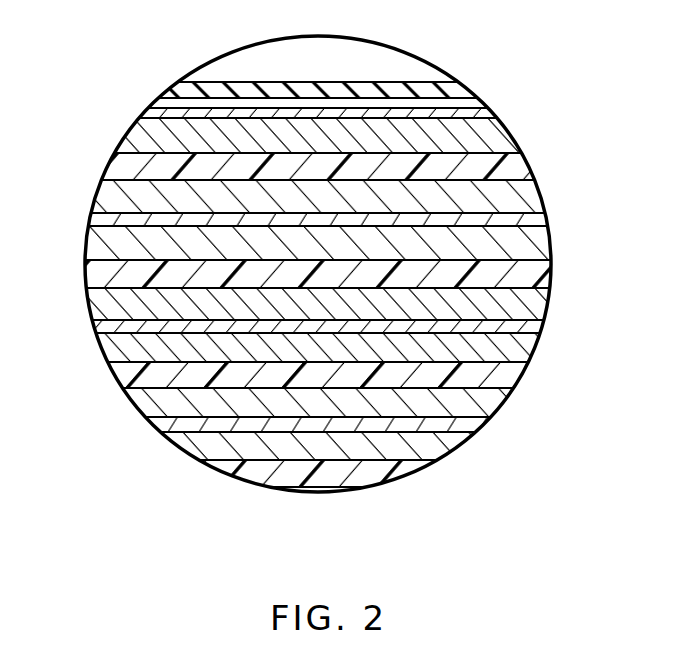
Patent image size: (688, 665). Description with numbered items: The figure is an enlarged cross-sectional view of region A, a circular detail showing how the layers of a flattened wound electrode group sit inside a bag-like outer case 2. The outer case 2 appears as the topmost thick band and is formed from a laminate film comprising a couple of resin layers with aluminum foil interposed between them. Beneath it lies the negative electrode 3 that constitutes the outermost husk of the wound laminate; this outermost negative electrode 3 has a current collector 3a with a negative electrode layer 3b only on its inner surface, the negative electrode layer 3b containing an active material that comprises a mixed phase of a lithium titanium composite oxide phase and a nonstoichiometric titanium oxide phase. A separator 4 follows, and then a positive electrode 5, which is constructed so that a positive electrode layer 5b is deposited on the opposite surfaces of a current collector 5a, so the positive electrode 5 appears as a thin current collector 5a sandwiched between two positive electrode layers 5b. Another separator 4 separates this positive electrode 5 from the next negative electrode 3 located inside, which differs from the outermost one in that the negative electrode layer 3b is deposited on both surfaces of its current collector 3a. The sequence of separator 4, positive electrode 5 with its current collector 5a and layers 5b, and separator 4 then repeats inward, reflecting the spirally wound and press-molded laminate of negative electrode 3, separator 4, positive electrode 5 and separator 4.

The region A is at (214, 79).
The outer case 2 is at (455, 90).
The negative electrode 3 is at (578, 58).
The current collector 3a is at (480, 116).
The negative electrode layer 3b is at (483, 138).
The separator 4 is at (128, 168).
The positive electrode 5 is at (610, 155).
The current collector 5a is at (520, 222).
The positive electrode layer 5b is at (512, 200).